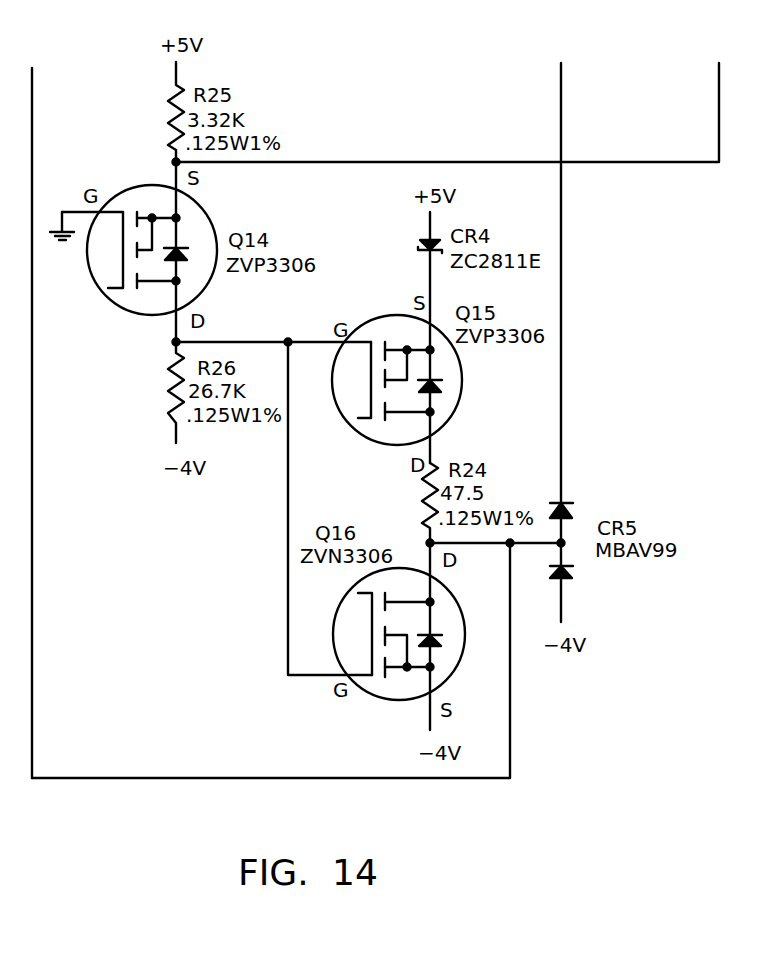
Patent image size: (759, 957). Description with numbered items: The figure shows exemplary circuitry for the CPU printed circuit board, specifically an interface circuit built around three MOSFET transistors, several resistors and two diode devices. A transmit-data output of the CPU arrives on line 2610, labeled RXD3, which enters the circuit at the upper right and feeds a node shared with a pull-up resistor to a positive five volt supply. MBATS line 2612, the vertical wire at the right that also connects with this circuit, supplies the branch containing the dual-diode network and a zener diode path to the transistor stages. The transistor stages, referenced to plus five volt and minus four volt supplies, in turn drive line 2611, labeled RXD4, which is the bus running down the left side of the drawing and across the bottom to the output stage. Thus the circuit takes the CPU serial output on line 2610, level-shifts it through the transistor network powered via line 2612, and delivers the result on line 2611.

The line (RXD3) 2610 is at (719, 137).
The line (RXD4) 2611 is at (33, 165).
The MBATS line 2612 is at (610, 118).